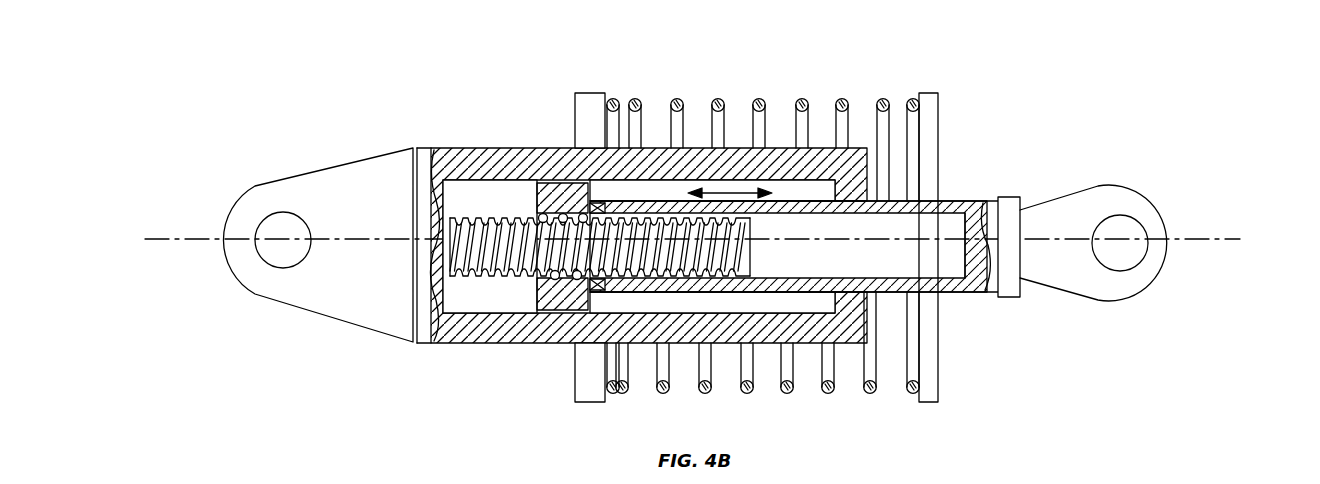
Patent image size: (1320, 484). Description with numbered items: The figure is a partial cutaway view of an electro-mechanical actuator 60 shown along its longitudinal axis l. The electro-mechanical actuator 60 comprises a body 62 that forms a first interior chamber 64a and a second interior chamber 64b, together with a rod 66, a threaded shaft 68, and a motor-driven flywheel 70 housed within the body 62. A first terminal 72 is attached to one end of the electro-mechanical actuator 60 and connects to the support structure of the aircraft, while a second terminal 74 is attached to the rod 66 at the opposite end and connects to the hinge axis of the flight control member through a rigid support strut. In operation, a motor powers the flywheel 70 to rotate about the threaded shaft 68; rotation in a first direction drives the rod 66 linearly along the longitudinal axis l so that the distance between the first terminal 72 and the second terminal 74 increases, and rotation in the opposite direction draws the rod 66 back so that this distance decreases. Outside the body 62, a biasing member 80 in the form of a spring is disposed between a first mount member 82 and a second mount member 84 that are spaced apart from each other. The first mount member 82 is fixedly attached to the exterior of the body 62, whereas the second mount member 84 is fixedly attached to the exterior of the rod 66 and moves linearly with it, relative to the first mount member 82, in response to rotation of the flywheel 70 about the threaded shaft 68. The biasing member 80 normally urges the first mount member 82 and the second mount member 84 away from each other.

The electro-mechanical actuator 60 is at (1018, 52).
The body 62 is at (530, 148).
The first interior chamber 64a is at (500, 300).
The second interior chamber 64b is at (735, 300).
The rod 66 is at (955, 200).
The threaded shaft 68 is at (458, 277).
The motor-driven flywheel 70 is at (535, 198).
The first terminal 72 is at (287, 308).
The second terminal 74 is at (1110, 300).
The biasing member 80 is at (762, 100).
The first mount member 82 is at (575, 115).
The second mount member 84 is at (940, 115).
The longitudinal axis l is at (1220, 239).